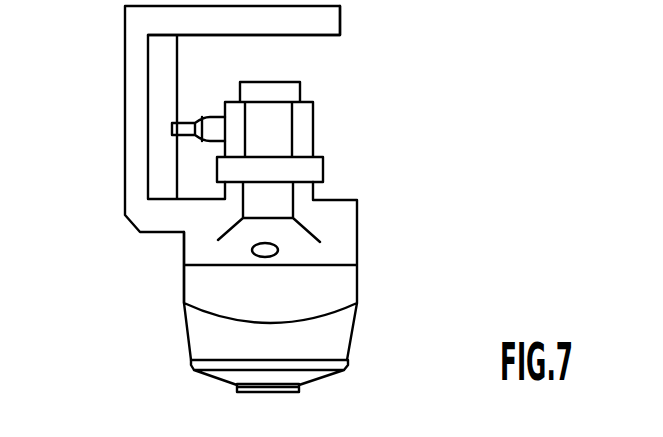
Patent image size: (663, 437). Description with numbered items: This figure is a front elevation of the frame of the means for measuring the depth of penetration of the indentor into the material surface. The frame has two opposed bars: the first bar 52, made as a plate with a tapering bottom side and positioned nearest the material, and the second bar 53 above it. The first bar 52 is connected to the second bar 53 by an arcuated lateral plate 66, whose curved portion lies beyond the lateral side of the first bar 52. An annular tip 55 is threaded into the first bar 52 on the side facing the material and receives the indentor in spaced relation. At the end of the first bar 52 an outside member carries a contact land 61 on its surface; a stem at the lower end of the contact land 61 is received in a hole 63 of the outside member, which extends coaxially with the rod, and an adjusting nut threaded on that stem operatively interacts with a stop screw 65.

The first bar 52 is at (197, 240).
The second bar 53 is at (327, 21).
The annular tip 55 is at (307, 377).
The contact land 61 is at (300, 90).
The hole 63 is at (280, 251).
The stop screw 65 is at (172, 129).
The arcuated lateral plate 66 is at (132, 61).